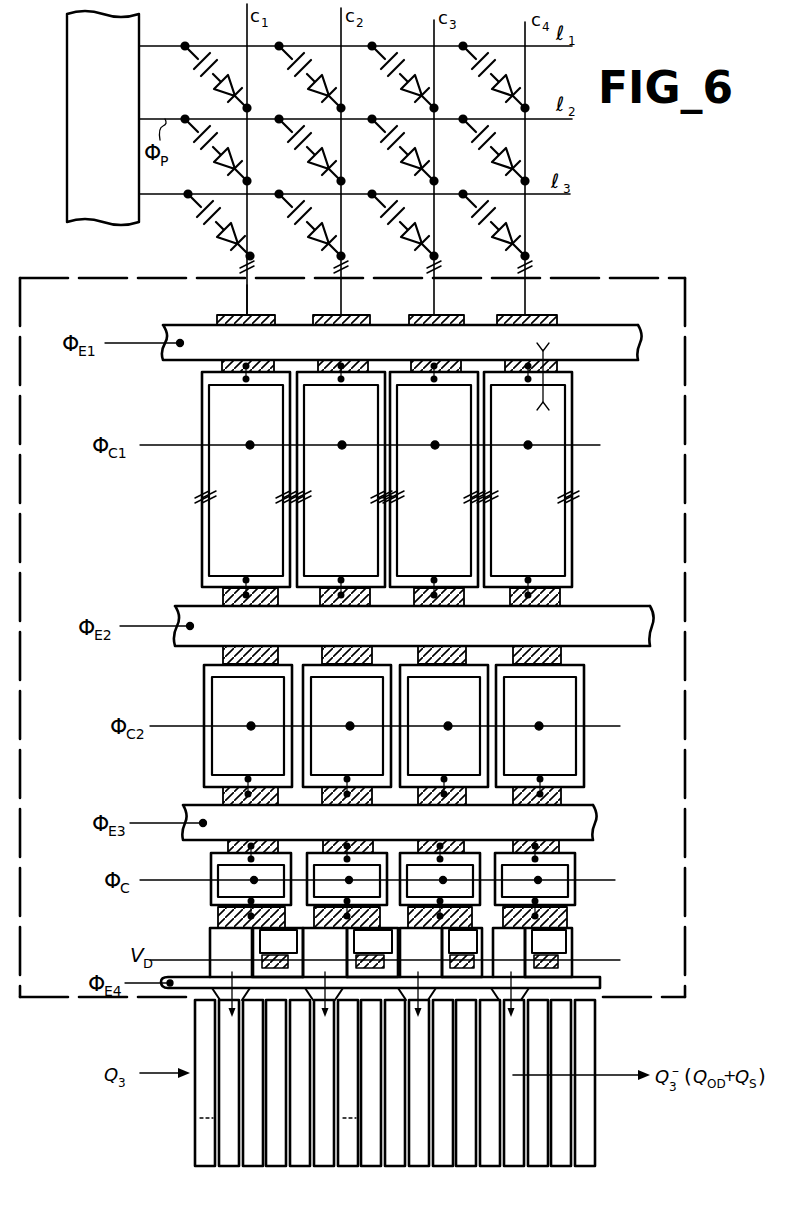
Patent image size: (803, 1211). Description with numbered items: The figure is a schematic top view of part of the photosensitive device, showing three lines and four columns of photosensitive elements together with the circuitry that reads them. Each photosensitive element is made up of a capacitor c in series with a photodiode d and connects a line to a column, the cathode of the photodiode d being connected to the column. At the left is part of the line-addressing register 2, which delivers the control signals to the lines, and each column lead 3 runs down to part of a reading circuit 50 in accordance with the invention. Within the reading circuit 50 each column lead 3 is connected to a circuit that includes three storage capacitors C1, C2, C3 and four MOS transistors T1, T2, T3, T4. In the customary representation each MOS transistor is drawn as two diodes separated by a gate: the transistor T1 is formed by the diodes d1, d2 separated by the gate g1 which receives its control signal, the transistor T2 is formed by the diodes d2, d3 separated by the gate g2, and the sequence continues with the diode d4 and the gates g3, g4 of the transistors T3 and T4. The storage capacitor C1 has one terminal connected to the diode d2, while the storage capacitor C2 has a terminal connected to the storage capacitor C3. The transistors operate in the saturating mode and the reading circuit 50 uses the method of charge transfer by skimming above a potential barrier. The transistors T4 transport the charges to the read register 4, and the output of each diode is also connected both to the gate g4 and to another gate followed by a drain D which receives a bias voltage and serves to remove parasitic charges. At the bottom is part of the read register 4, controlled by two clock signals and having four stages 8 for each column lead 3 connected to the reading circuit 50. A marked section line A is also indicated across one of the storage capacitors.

The line-addressing register 2 is at (70, 124).
The column lead 3 is at (247, 291).
The read register 4 is at (218, 1135).
The stage of the read register 8 is at (382, 1069).
The reading circuit 50 is at (718, 436).
The capacitor c is at (188, 50).
The photodiode d is at (247, 108).
The diode d1 is at (264, 315).
The diode d2 is at (222, 592).
The diode d3 is at (232, 785).
The diode d4 is at (220, 918).
The gate g1 is at (415, 333).
The gate g2 is at (414, 608).
The gate g3 is at (413, 822).
The gate g4 is at (600, 982).
The MOS transistor T1 is at (652, 332).
The MOS transistor T2 is at (636, 596).
The MOS transistor T3 is at (389, 822).
The MOS transistor T4 is at (391, 952).
The storage capacitor C1 is at (387, 480).
The storage capacitor C2 is at (394, 730).
The storage capacitor C3 is at (393, 881).
The section line A is at (549, 386).
The drain D is at (558, 962).